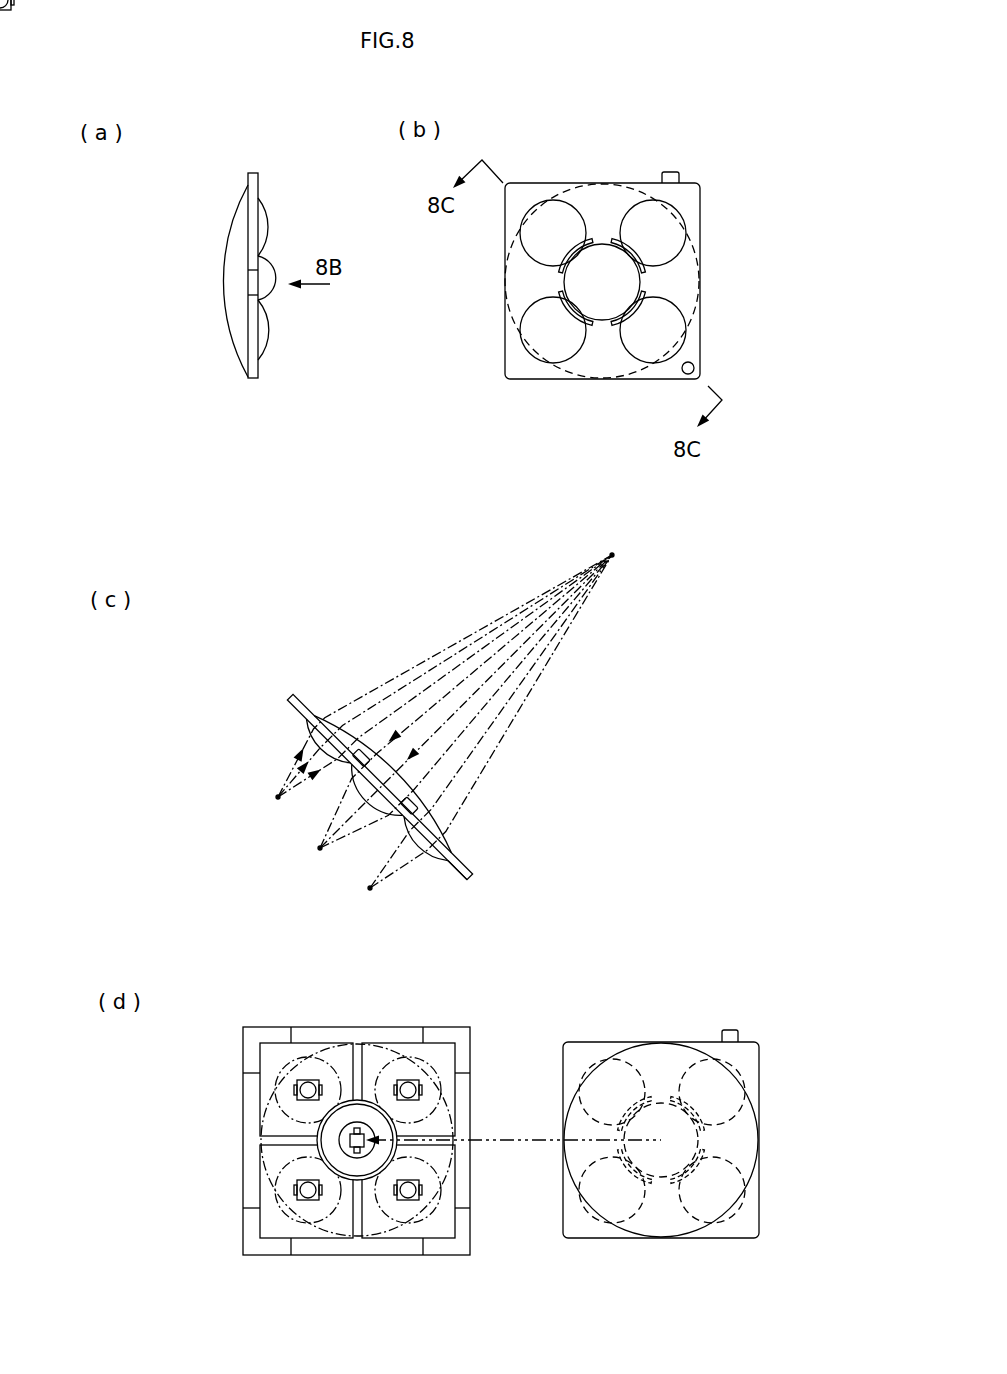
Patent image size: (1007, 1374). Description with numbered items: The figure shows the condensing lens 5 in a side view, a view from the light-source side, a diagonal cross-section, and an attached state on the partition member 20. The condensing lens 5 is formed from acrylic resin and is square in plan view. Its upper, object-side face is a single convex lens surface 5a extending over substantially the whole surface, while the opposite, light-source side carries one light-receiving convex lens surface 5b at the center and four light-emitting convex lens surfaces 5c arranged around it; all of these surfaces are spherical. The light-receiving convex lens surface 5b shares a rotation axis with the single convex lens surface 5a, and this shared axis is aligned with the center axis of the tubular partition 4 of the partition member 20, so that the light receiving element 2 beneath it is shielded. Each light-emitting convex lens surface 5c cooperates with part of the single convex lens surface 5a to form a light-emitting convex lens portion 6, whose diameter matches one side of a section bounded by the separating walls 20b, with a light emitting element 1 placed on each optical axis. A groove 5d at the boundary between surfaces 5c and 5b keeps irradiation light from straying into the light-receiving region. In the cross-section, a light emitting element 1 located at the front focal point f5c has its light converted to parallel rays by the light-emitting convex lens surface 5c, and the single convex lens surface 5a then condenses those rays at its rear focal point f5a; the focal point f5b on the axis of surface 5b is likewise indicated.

The condensing lens 5 is at (222, 374).
The single convex lens surface 5a is at (225, 268).
The light-receiving convex lens surface 5b is at (273, 297).
The light-emitting convex lens surface 5c is at (269, 226).
The groove 5d is at (640, 255).
The light-emitting convex lens portion 6 is at (552, 210).
The rear focal point position of the single convex lens surface f5a is at (614, 557).
The focal point of lens portion 5b f5b is at (320, 848).
The front focal point position of the light-emitting convex lens surface f5c is at (278, 795).
The partition member 20 is at (250, 1084).
The separating walls 20b is at (357, 1067).
The light emitting elements 1 is at (407, 1085).
The light receiving element 2 is at (352, 1160).
The partition 4 is at (361, 1152).